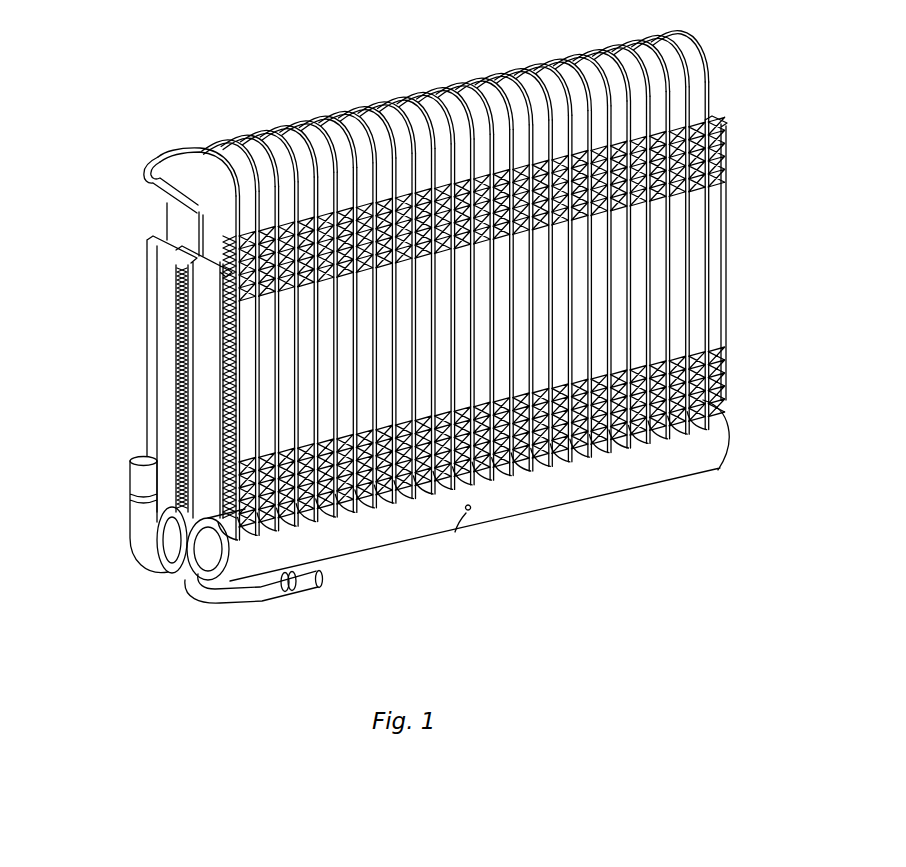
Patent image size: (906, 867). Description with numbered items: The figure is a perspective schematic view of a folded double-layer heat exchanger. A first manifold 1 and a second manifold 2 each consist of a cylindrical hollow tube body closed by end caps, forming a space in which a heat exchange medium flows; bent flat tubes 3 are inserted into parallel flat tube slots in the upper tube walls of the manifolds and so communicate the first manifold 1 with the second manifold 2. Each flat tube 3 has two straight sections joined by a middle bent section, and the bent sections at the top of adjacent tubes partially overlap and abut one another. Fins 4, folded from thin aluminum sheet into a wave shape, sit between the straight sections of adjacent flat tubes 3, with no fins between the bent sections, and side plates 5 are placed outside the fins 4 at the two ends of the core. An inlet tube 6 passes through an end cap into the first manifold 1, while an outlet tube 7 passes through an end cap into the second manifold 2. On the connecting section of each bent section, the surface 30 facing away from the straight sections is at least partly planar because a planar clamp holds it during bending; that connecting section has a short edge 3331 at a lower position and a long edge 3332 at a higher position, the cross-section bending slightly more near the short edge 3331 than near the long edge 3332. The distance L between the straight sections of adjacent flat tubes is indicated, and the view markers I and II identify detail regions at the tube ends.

The first manifold 1 is at (181, 525).
The second manifold 2 is at (508, 508).
The flat tube 3 is at (394, 275).
The surface 30 is at (500, 84).
The short edge 3331 is at (157, 170).
The long edge 3332 is at (199, 155).
The fin 4 is at (692, 405).
The side plate 5 is at (203, 373).
The inlet tube 6 is at (137, 529).
The outlet tube 7 is at (257, 589).
The distance L is at (413, 500).
The detail view I is at (133, 198).
The detail view II is at (703, 55).